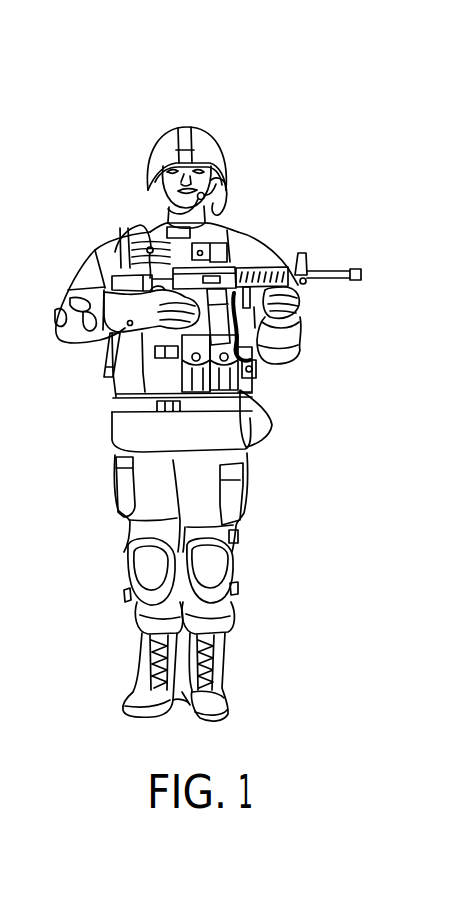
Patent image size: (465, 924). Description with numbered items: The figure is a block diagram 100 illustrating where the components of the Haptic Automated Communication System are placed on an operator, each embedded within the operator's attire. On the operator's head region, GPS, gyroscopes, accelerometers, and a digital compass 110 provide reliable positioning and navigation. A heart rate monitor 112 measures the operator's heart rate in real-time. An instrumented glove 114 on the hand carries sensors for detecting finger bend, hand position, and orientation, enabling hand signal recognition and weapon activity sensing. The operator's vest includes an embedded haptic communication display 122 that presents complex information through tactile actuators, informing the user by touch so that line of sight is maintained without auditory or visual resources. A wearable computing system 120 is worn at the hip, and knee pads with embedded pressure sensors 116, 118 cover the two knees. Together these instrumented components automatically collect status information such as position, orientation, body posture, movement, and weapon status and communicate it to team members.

The block diagram 100 is at (72, 80).
The digital compass 110 is at (150, 228).
The heart rate monitor 112 is at (133, 257).
The instrumented glove 114 is at (100, 366).
The knee pad with embedded pressure sensors 116 is at (133, 567).
The knee pad with embedded pressure sensors 118 is at (224, 565).
The wearable computing system 120 is at (256, 377).
The embedded haptic communication display 122 is at (252, 244).